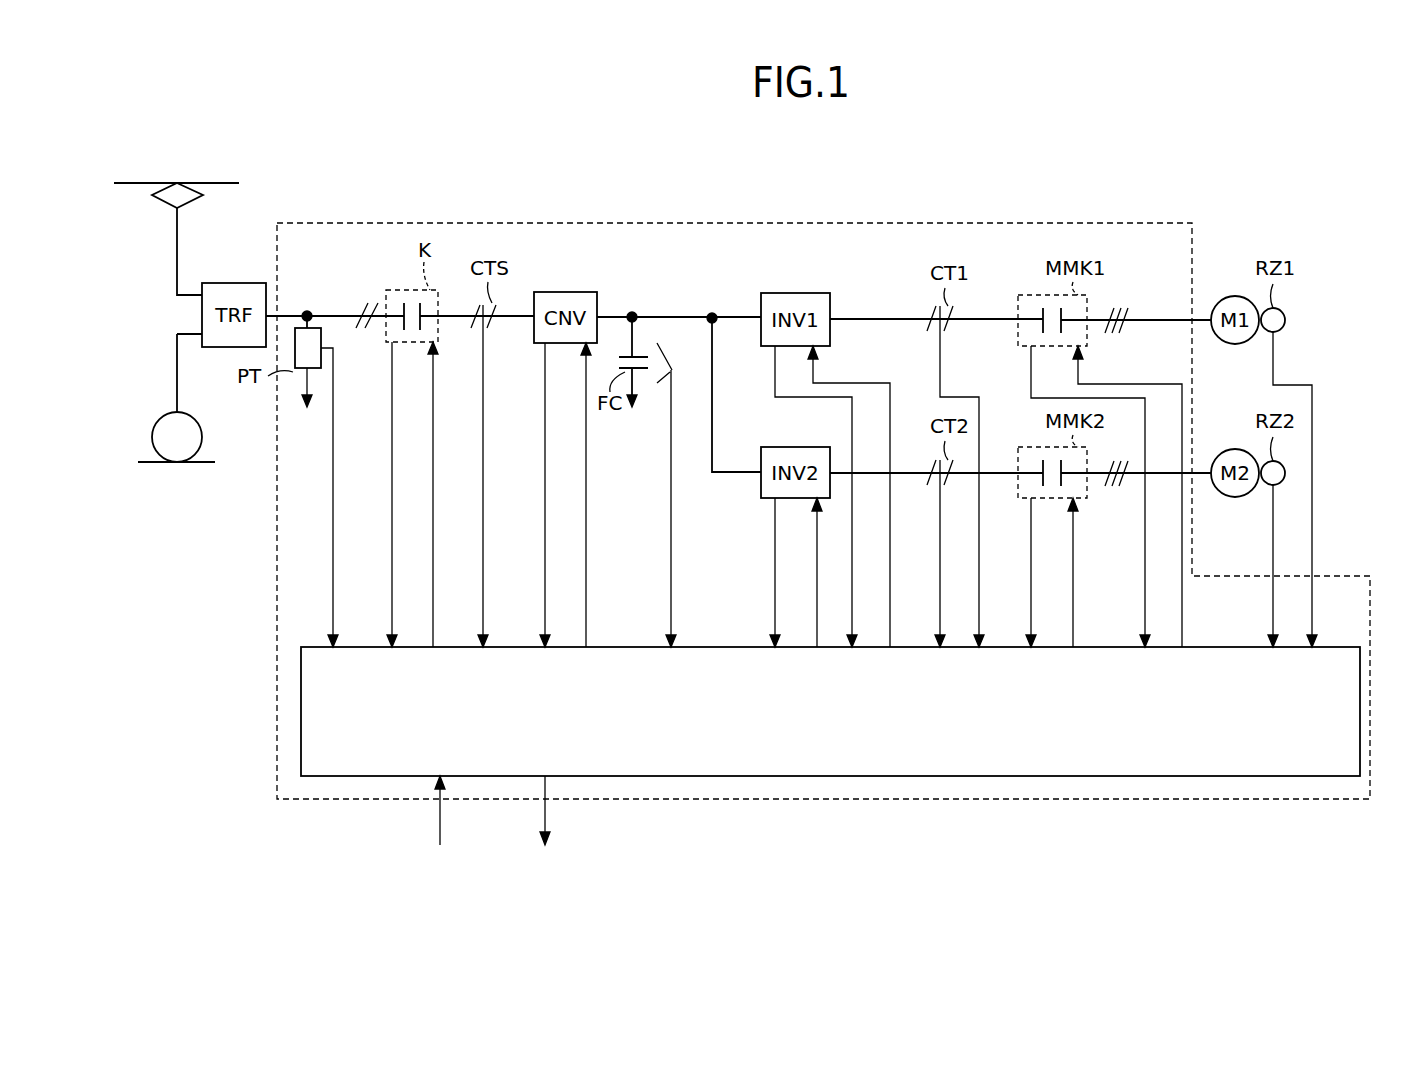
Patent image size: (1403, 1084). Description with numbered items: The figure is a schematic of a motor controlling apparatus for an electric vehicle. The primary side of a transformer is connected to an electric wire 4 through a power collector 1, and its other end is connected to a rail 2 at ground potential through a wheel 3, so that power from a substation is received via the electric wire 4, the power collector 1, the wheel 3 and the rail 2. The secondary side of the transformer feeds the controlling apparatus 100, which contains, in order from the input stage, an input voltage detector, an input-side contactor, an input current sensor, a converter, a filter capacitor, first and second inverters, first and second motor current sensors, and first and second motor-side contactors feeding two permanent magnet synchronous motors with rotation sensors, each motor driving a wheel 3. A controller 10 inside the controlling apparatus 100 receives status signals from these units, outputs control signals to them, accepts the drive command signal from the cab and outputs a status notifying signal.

The power collector 1 is at (164, 203).
The rail 2 is at (205, 462).
The wheel 3 is at (202, 436).
The electric wire 4 is at (217, 183).
The controller 10 is at (827, 777).
The controlling apparatus 100 is at (724, 800).